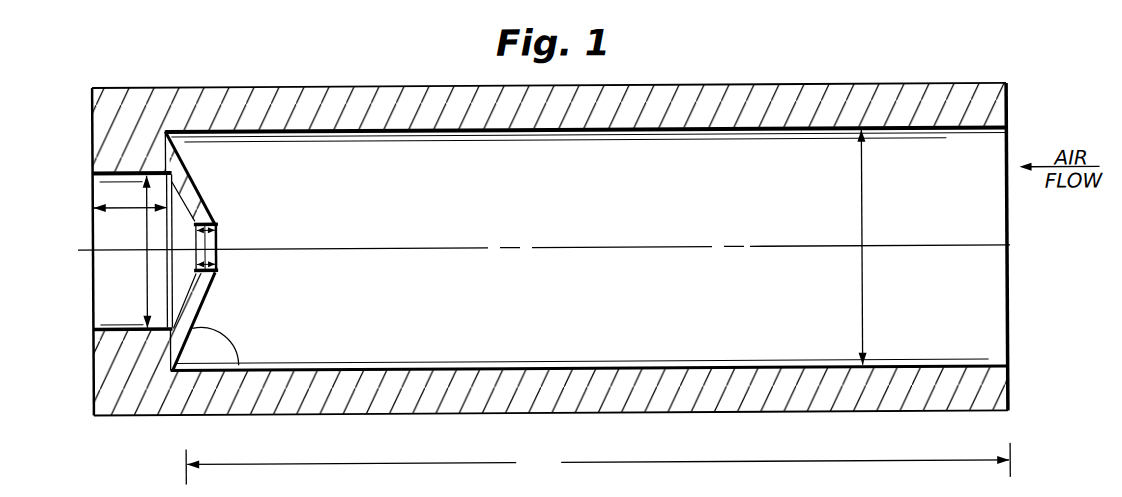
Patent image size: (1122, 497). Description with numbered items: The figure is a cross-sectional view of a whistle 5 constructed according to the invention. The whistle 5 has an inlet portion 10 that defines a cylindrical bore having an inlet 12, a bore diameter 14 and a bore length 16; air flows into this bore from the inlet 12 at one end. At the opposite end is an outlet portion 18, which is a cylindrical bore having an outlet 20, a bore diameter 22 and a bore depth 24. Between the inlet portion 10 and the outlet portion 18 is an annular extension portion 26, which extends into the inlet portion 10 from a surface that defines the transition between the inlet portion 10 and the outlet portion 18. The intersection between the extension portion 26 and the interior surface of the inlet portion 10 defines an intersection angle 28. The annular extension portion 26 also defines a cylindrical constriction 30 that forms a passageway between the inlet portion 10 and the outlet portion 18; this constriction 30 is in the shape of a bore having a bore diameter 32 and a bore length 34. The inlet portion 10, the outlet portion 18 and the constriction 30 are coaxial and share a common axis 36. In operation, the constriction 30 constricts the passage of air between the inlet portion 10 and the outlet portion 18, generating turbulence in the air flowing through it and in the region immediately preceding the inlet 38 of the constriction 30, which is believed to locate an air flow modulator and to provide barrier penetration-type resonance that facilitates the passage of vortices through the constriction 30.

The whistle 5 is at (745, 104).
The inlet portion 10 is at (685, 348).
The inlet 12 is at (1023, 280).
The bore diameter 14 is at (862, 220).
The bore length 16 is at (598, 466).
The outlet portion 18 is at (106, 283).
The outlet 20 is at (92, 316).
The bore diameter 22 is at (146, 300).
The bore depth 24 is at (117, 209).
The annular extension portion 26 is at (211, 292).
The intersection angle 28 is at (237, 347).
The cylindrical constriction 30 is at (218, 228).
The bore diameter 32 is at (217, 248).
The bore length 34 is at (217, 253).
The common axis 36 is at (1010, 249).
The inlet of the constriction 38 is at (217, 233).